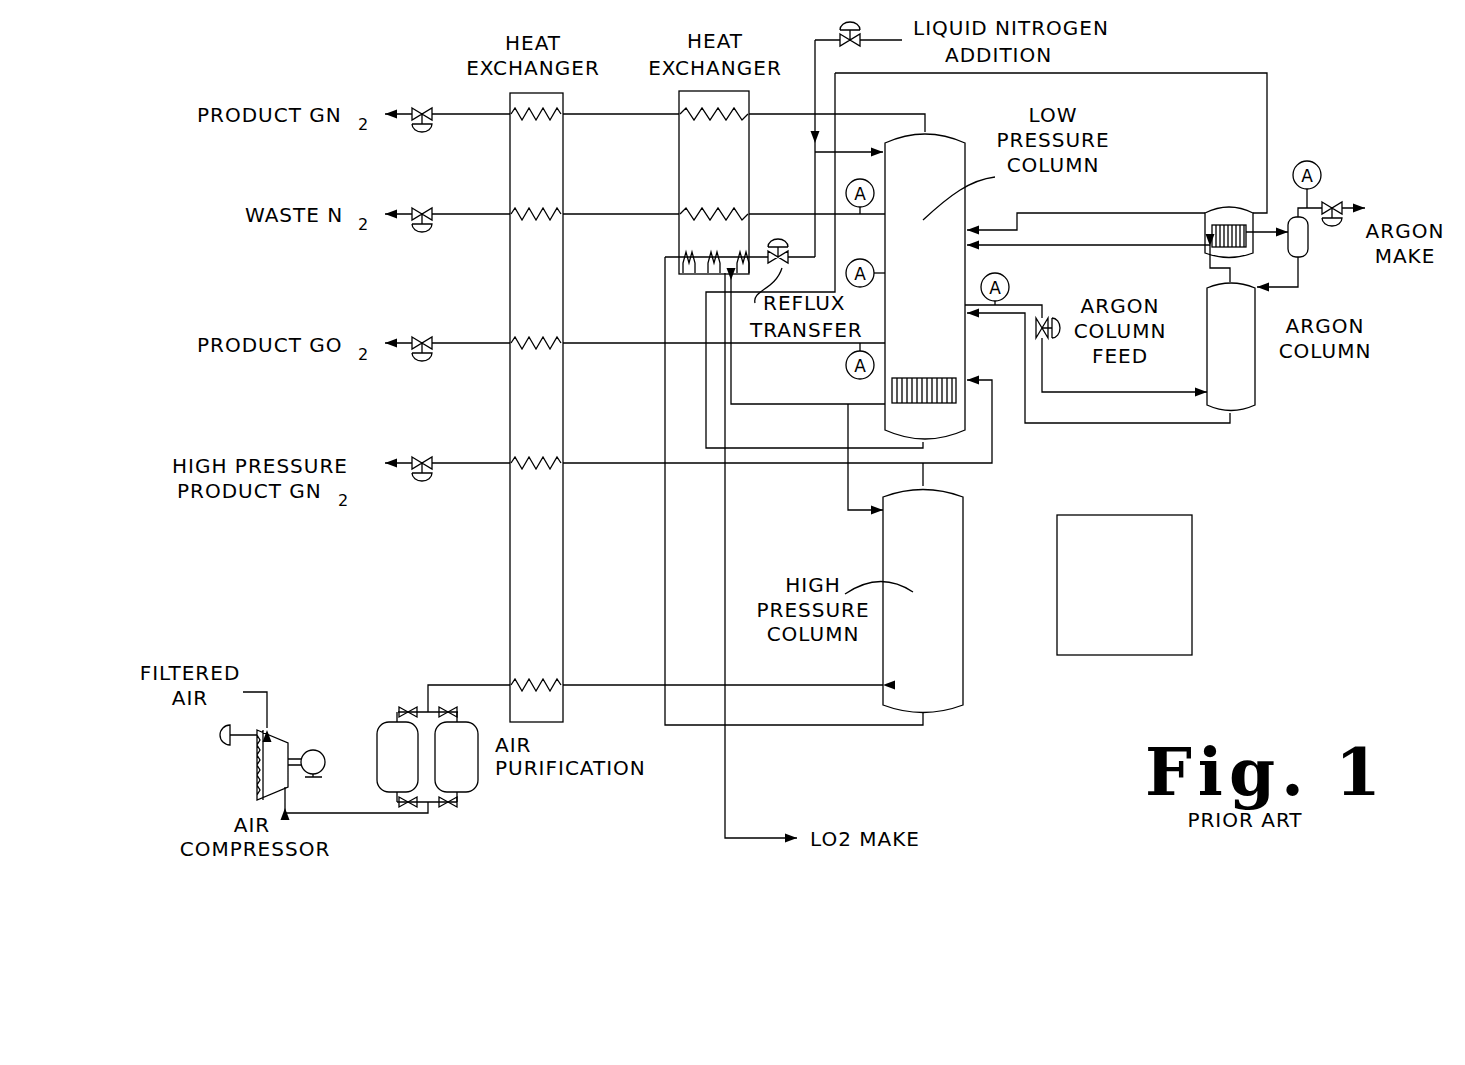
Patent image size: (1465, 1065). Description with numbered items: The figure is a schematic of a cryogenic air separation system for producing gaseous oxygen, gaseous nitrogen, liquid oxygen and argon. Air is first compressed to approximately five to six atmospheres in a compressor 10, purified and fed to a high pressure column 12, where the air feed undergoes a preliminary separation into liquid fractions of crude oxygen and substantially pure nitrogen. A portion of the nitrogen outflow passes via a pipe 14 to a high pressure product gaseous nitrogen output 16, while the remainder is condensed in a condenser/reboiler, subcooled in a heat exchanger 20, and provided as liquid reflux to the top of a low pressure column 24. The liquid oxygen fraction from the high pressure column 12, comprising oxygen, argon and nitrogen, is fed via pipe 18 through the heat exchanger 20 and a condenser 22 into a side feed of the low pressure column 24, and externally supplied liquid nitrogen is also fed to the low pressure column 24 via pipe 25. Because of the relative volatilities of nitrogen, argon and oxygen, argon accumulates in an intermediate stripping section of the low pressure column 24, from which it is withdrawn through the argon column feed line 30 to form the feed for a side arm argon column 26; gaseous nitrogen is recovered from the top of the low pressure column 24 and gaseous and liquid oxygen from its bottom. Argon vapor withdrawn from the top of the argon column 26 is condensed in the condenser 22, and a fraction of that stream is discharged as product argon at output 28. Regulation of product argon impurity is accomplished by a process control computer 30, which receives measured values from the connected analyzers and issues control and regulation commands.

The compressor 10 is at (273, 745).
The high pressure column 12 is at (911, 645).
The pipe 14 is at (755, 465).
The high pressure product gaseous nitrogen output 16 is at (422, 457).
The pipe 18 is at (783, 725).
The heat exchanger 20 is at (700, 165).
The condenser 22 is at (1246, 207).
The low pressure column 24 is at (910, 305).
The pipe 25 is at (815, 57).
The side arm argon column 26 is at (1218, 357).
The output 28 is at (1350, 208).
The process control computer 30 is at (1140, 515).